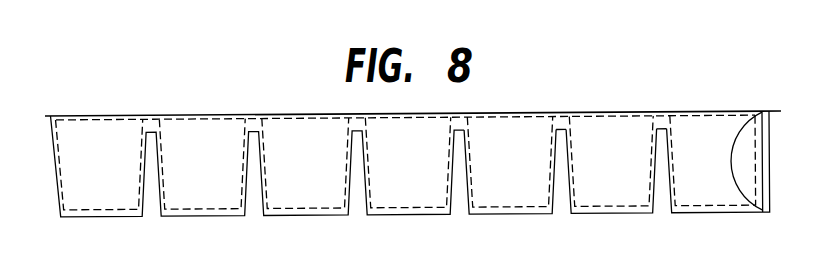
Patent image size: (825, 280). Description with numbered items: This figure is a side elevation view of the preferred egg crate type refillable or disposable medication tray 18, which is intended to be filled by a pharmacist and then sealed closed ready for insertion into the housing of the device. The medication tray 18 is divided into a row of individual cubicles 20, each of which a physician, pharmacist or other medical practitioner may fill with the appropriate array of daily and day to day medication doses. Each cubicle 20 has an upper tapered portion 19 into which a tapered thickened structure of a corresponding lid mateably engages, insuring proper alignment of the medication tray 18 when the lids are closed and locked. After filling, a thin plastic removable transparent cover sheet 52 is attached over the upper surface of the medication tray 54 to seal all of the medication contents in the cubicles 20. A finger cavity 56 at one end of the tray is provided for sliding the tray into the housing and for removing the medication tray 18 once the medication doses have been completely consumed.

The medication tray 18 is at (431, 144).
The upper tapered portion 19 is at (468, 129).
The cubicle 20 is at (522, 147).
The removable transparent cover sheet 52 is at (703, 110).
The upper surface of the medication tray 54 is at (599, 213).
The finger cavity 56 is at (748, 176).